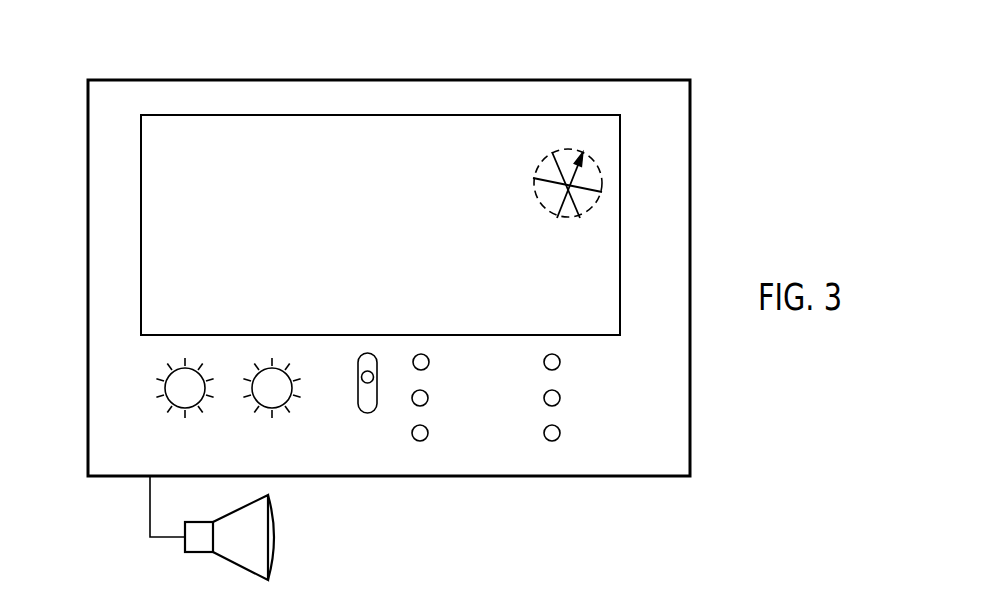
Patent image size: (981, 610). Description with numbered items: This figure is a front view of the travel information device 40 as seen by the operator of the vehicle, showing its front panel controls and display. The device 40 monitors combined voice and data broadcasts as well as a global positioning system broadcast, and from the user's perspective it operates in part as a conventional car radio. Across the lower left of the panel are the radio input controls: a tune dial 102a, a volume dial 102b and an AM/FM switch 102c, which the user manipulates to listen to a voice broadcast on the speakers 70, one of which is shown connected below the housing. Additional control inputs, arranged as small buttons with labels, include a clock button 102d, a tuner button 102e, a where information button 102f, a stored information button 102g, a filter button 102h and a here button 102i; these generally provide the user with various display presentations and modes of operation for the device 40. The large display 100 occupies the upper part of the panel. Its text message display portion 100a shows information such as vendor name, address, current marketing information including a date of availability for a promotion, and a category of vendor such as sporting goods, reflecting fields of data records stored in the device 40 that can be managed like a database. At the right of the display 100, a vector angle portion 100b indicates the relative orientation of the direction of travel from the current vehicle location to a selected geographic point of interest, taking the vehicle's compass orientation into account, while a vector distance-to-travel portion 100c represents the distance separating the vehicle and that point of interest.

The travel information device 40 is at (634, 481).
The speakers 70 is at (267, 550).
The display 100 is at (509, 106).
The text message display portion 100a is at (310, 136).
The vector angle portion 100b is at (568, 185).
The vector distance-to-travel portion 100c is at (587, 245).
The tune dial 102a is at (178, 387).
The volume dial 102b is at (270, 380).
The AM/FM switch 102c is at (367, 415).
The clock button 102d is at (425, 355).
The tuner button 102e is at (413, 403).
The where information button 102f is at (423, 441).
The stored information button 102g is at (556, 355).
The filter button 102h is at (545, 403).
The here button 102i is at (555, 441).